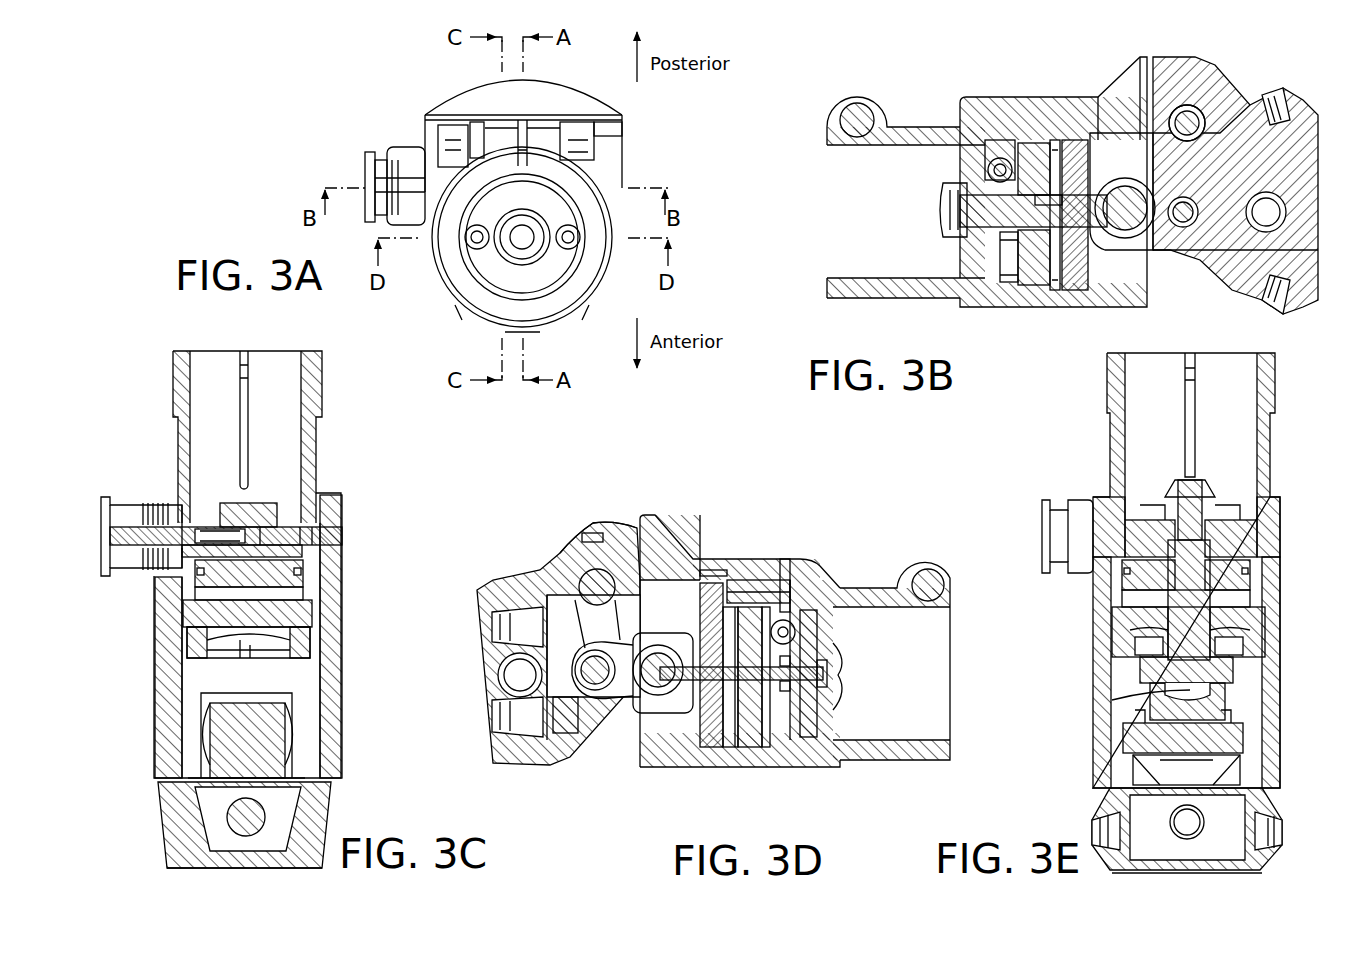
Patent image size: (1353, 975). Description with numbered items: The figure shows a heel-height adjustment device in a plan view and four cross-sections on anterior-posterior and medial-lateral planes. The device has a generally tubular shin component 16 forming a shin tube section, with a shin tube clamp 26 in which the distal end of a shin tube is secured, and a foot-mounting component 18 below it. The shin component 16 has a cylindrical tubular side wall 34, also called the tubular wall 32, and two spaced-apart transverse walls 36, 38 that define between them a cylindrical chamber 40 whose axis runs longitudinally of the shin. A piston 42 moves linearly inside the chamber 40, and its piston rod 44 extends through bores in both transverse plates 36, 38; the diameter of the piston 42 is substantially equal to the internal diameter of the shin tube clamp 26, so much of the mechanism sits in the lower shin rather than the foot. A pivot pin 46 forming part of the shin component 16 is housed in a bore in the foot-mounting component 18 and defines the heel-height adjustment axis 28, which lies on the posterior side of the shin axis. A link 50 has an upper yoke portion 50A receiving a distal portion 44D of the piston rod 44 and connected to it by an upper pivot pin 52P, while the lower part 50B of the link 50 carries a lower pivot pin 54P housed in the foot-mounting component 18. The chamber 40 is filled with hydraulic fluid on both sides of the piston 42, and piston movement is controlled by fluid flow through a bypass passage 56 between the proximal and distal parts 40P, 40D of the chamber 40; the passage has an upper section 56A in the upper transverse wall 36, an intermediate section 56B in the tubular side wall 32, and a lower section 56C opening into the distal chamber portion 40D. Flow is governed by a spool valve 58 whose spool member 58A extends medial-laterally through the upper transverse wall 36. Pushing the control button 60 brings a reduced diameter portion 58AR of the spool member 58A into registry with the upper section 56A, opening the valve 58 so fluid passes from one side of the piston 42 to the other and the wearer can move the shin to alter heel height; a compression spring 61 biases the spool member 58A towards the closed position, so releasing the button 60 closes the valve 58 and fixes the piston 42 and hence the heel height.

In FIG. 3B, the shin component 16 is at (888, 85).
In FIG. 3C, the shin component 16 is at (365, 432).
In FIG. 3D, the shin component 16 is at (863, 528).
In FIG. 3E, the shin component 16 is at (1285, 450).
In FIG. 3B, the foot-mounting component 18 is at (1237, 295).
In FIG. 3C, the foot-mounting component 18 is at (335, 800).
In FIG. 3D, the foot-mounting component 18 is at (578, 745).
In FIG. 3E, the foot-mounting component 18 is at (1270, 810).
In FIG. 3A, the shin tube clamp 26 is at (548, 130).
In FIG. 3B, the shin tube clamp 26 is at (857, 300).
In FIG. 3C, the shin tube clamp 26 is at (312, 372).
In FIG. 3D, the shin tube clamp 26 is at (927, 565).
In FIG. 3E, the shin tube clamp 26 is at (1265, 380).
In FIG. 3D, the heel-height adjustment axis 28 is at (560, 560).
In FIG. 3A, the tubular side wall 32 is at (600, 185).
In FIG. 3B, the tubular side wall 32 is at (980, 307).
In FIG. 3C, the tubular side wall 32 is at (316, 450).
In FIG. 3D, the tubular side wall 32 is at (722, 560).
In FIG. 3E, the tubular side wall 32 is at (1186, 642).
In FIG. 3B, the cylindrical tubular side wall 34 is at (1037, 290).
In FIG. 3B, the upper transverse wall 36 is at (1010, 150).
In FIG. 3C, the upper transverse wall 36 is at (330, 555).
In FIG. 3D, the upper transverse wall 36 is at (808, 740).
In FIG. 3E, the upper transverse wall 36 is at (1255, 540).
In FIG. 3B, the lower transverse wall 38 is at (1075, 143).
In FIG. 3C, the lower transverse wall 38 is at (300, 612).
In FIG. 3D, the lower transverse wall 38 is at (705, 750).
In FIG. 3E, the lower transverse wall 38 is at (1255, 620).
In FIG. 3B, the cylindrical chamber 40 is at (1047, 145).
In FIG. 3C, the cylindrical chamber 40 is at (305, 593).
In FIG. 3E, the cylindrical chamber 40 is at (1245, 598).
In FIG. 3D, the distal chamber part 40D is at (728, 750).
In FIG. 3D, the proximal chamber part 40P is at (766, 750).
In FIG. 3B, the piston 42 is at (1028, 143).
In FIG. 3C, the piston 42 is at (300, 575).
In FIG. 3D, the piston 42 is at (748, 760).
In FIG. 3E, the piston 42 is at (1250, 565).
In FIG. 3B, the piston rod 44 is at (1012, 262).
In FIG. 3D, the piston rod 44 is at (743, 673).
In FIG. 3E, the piston rod 44 is at (1115, 625).
In FIG. 3E, the distal portion of piston rod 44D is at (1170, 690).
In FIG. 3B, the pivot pin 46 is at (1203, 118).
In FIG. 3D, the pivot pin 46 is at (590, 585).
In FIG. 3B, the link 50 is at (1143, 240).
In FIG. 3C, the link 50 is at (246, 735).
In FIG. 3D, the link 50 is at (627, 693).
In FIG. 3E, the link 50 is at (1225, 700).
In FIG. 3E, the upper yoke portion 50A is at (1215, 648).
In FIG. 3E, the lower part of link 50B is at (1215, 770).
In FIG. 3E, the upper pivot pin 52P is at (1220, 672).
In FIG. 3E, the lower pivot pin 54P is at (1225, 740).
In FIG. 3D, the bypass passage 56 is at (733, 560).
In FIG. 3C, the upper section of bypass passage 56A is at (230, 630).
In FIG. 3D, the upper section of bypass passage 56A is at (787, 560).
In FIG. 3D, the intermediate section of bypass passage 56B is at (755, 580).
In FIG. 3D, the lower section of bypass passage 56C is at (705, 565).
In FIG. 3C, the spool valve 58 is at (130, 595).
In FIG. 3B, the spool member 58A is at (998, 158).
In FIG. 3C, the spool member 58A is at (300, 535).
In FIG. 3D, the spool member 58A is at (796, 632).
In FIG. 3C, the reduced diameter portion 58AR is at (225, 535).
In FIG. 3A, the control button 60 is at (375, 165).
In FIG. 3C, the control button 60 is at (105, 520).
In FIG. 3E, the control button 60 is at (1060, 520).
In FIG. 3C, the compression spring 61 is at (130, 500).